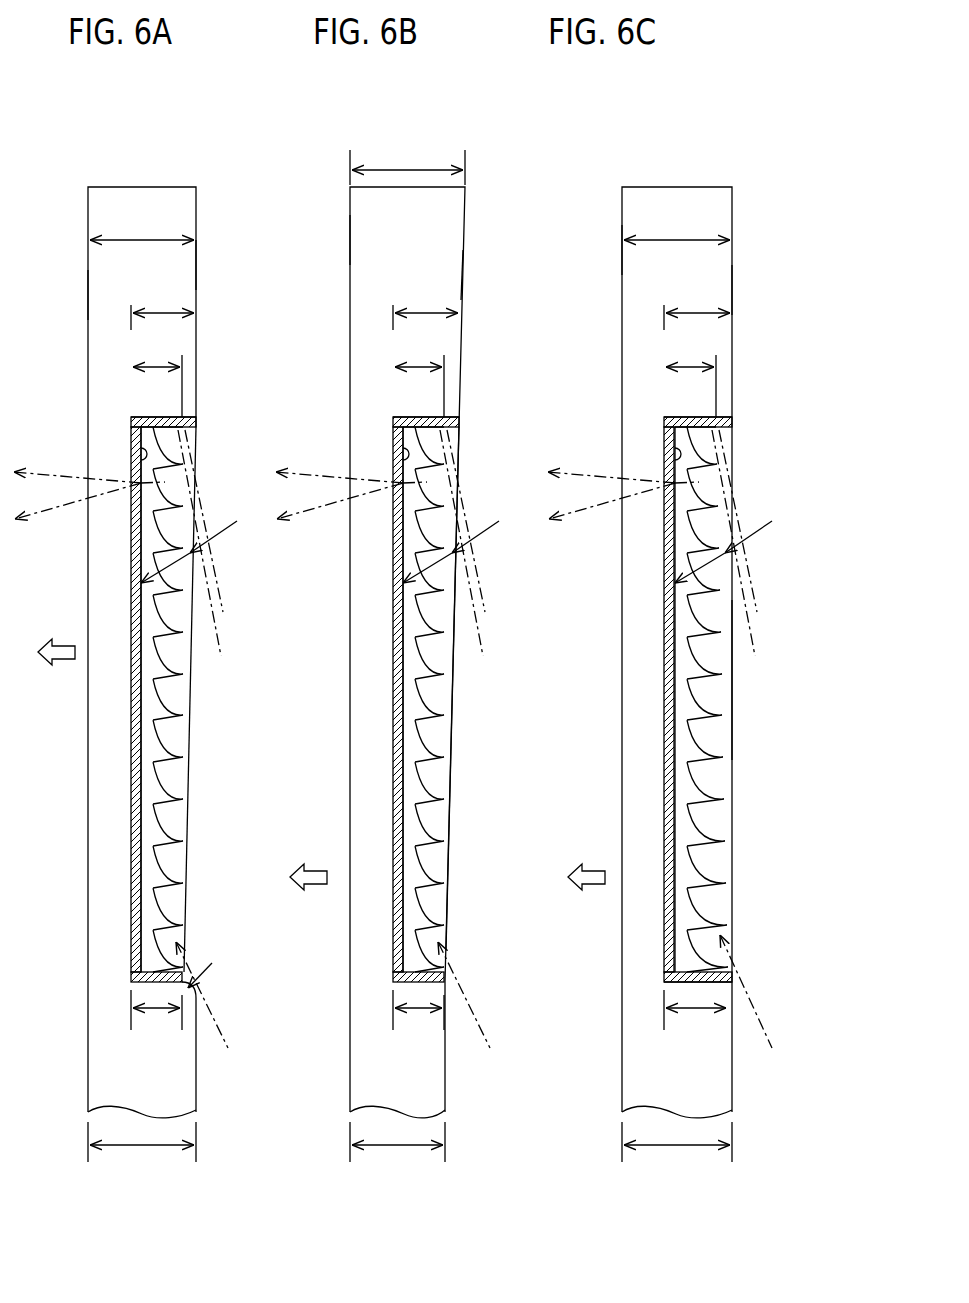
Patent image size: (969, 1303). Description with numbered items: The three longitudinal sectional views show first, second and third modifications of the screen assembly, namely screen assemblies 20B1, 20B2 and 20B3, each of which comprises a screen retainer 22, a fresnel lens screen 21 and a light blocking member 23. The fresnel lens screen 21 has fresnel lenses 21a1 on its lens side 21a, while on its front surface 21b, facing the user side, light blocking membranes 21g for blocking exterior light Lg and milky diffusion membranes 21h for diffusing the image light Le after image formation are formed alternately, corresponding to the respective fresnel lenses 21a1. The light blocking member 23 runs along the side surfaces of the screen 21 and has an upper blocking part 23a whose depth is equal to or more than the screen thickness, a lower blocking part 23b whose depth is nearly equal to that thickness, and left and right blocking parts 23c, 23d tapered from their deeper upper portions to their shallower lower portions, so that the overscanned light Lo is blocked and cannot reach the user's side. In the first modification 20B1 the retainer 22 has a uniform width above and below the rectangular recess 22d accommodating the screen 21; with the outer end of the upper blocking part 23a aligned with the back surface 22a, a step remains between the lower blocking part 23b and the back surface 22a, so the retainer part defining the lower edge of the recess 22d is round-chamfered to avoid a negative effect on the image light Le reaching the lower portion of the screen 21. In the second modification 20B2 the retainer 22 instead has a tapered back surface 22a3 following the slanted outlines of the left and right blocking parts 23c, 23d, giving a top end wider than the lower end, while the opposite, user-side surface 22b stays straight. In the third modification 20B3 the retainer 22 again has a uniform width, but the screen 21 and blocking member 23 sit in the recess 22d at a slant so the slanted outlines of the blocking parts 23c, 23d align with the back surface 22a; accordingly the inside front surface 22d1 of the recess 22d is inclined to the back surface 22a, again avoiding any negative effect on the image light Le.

In FIG. 6A, the screen assembly 20B1 is at (97, 146).
In FIG. 6B, the screen assembly 20B2 is at (360, 146).
In FIG. 6C, the screen assembly 20B3 is at (601, 146).
In FIG. 6A, the fresnel lens screen 21 is at (178, 778).
In FIG. 6B, the fresnel lens screen 21 is at (440, 778).
In FIG. 6C, the fresnel lens screen 21 is at (712, 778).
In FIG. 6A, the light emitting surface 21a is at (168, 699).
In FIG. 6B, the light emitting surface 21a is at (429, 699).
In FIG. 6C, the light emitting surface 21a is at (707, 699).
In FIG. 6A, the fresnel lenses 21a1 is at (180, 746).
In FIG. 6B, the fresnel lenses 21a1 is at (442, 746).
In FIG. 6C, the fresnel lenses 21a1 is at (724, 746).
In FIG. 6A, the front surface 21b is at (141, 452).
In FIG. 6B, the front surface 21b is at (403, 452).
In FIG. 6C, the front surface 21b is at (675, 452).
In FIG. 6A, the light blocking membranes 21g is at (131, 566).
In FIG. 6B, the light blocking membranes 21g is at (393, 515).
In FIG. 6C, the light blocking membranes 21g is at (675, 545).
In FIG. 6A, the milky diffusion membranes 21h is at (141, 483).
In FIG. 6B, the milky diffusion membranes 21h is at (403, 483).
In FIG. 6C, the milky diffusion membranes 21h is at (675, 483).
In FIG. 6A, the screen retainer 22 is at (84, 208).
In FIG. 6B, the screen retainer 22 is at (346, 208).
In FIG. 6C, the screen retainer 22 is at (618, 208).
In FIG. 6A, the back surface 22a is at (196, 262).
In FIG. 6C, the back surface 22a is at (732, 287).
In FIG. 6B, the tapered back surface 22a3 is at (462, 270).
In FIG. 6A, the inner side surface of frame 22b is at (88, 296).
In FIG. 6B, the inner side surface of frame 22b is at (350, 241).
In FIG. 6C, the inner side surface of frame 22b is at (622, 251).
In FIG. 6A, the rectangular recess 22d is at (165, 417).
In FIG. 6B, the rectangular recess 22d is at (427, 417).
In FIG. 6C, the rectangular recess 22d is at (699, 417).
In FIG. 6C, the inside front surface 22d1 is at (676, 982).
In FIG. 6A, the light blocking member 23 is at (203, 441).
In FIG. 6B, the light blocking member 23 is at (465, 441).
In FIG. 6C, the light blocking member 23 is at (738, 441).
In FIG. 6A, the upper blocking part 23a is at (196, 421).
In FIG. 6B, the upper blocking part 23a is at (459, 421).
In FIG. 6C, the upper blocking part 23a is at (732, 421).
In FIG. 6A, the lower blocking part 23b is at (131, 985).
In FIG. 6B, the lower blocking part 23b is at (393, 985).
In FIG. 6C, the lower blocking part 23b is at (664, 985).
In FIG. 6A, the left blocking part 23c is at (184, 665).
In FIG. 6B, the left blocking part 23c is at (446, 665).
In FIG. 6C, the left blocking part 23c is at (724, 674).
In FIG. 6A, the right blocking part 23d is at (190, 699).
In FIG. 6B, the right blocking part 23d is at (452, 688).
In FIG. 6A, the exterior light Lg is at (230, 548).
In FIG. 6B, the exterior light Lg is at (494, 548).
In FIG. 6C, the exterior light Lg is at (761, 542).
In FIG. 6A, the overscanned light Lo is at (223, 601).
In FIG. 6B, the overscanned light Lo is at (485, 601).
In FIG. 6C, the overscanned light Lo is at (757, 601).
In FIG. 6A, the image light Le is at (232, 636).
In FIG. 6B, the image light Le is at (493, 1027).
In FIG. 6C, the image light Le is at (756, 651).